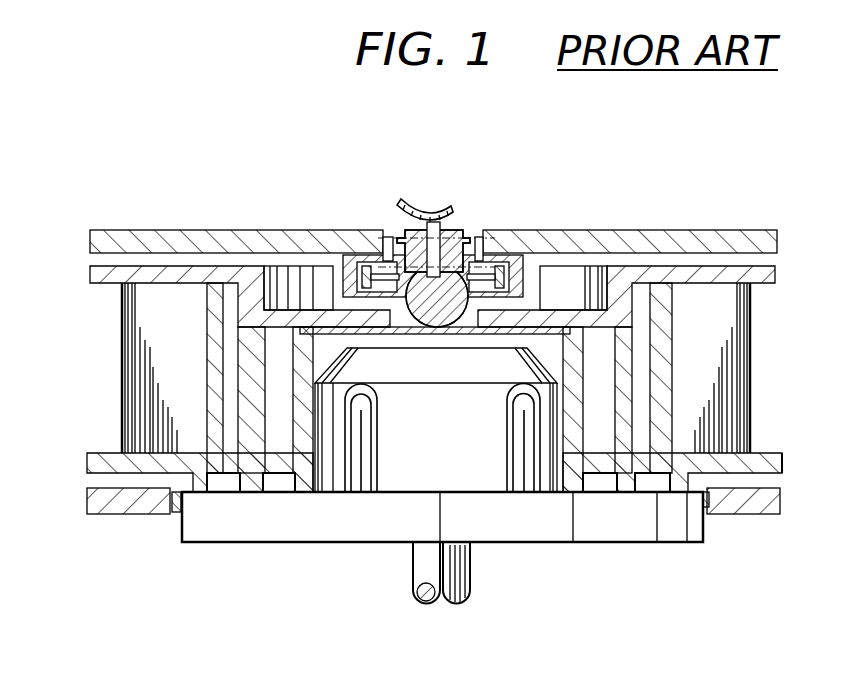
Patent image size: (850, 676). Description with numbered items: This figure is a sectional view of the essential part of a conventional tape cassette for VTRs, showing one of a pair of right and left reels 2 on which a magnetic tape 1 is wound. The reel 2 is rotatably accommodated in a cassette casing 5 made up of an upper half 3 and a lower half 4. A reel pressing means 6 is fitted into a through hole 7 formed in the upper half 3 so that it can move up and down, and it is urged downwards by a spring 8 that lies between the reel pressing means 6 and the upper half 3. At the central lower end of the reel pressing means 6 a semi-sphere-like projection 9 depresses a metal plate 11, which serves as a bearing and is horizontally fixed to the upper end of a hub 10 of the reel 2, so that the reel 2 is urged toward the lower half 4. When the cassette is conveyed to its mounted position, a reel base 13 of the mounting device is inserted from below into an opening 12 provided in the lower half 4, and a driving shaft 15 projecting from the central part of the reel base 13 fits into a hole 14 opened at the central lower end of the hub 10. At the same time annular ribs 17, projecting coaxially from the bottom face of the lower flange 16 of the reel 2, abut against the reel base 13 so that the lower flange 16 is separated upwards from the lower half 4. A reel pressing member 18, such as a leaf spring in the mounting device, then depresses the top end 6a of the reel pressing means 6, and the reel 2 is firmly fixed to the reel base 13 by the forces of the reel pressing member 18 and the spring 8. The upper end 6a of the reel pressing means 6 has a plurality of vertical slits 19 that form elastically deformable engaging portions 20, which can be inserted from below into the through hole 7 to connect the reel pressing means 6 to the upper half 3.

The magnetic tape 1 is at (742, 358).
The reel 2 is at (782, 306).
The upper half 3 is at (196, 242).
The lower half 4 is at (141, 505).
The cassette casing 5 is at (433, 199).
The reel pressing means 6 is at (423, 264).
The top end of the reel pressing means 6a is at (450, 232).
The through hole 7 is at (473, 247).
The spring 8 is at (372, 262).
The semi-sphere-like projection 9 is at (456, 330).
The hub 10 is at (570, 440).
The metal plate 11 is at (437, 334).
The opening 12 is at (180, 502).
The reel base 13 is at (307, 530).
The hole 14 is at (562, 458).
The driving shaft 15 is at (407, 470).
The lower flange 16 is at (775, 462).
The annular ribs 17 is at (202, 492).
The reel pressing member 18 is at (412, 208).
The vertical slits 19 is at (438, 246).
The engaging portions 20 is at (403, 230).